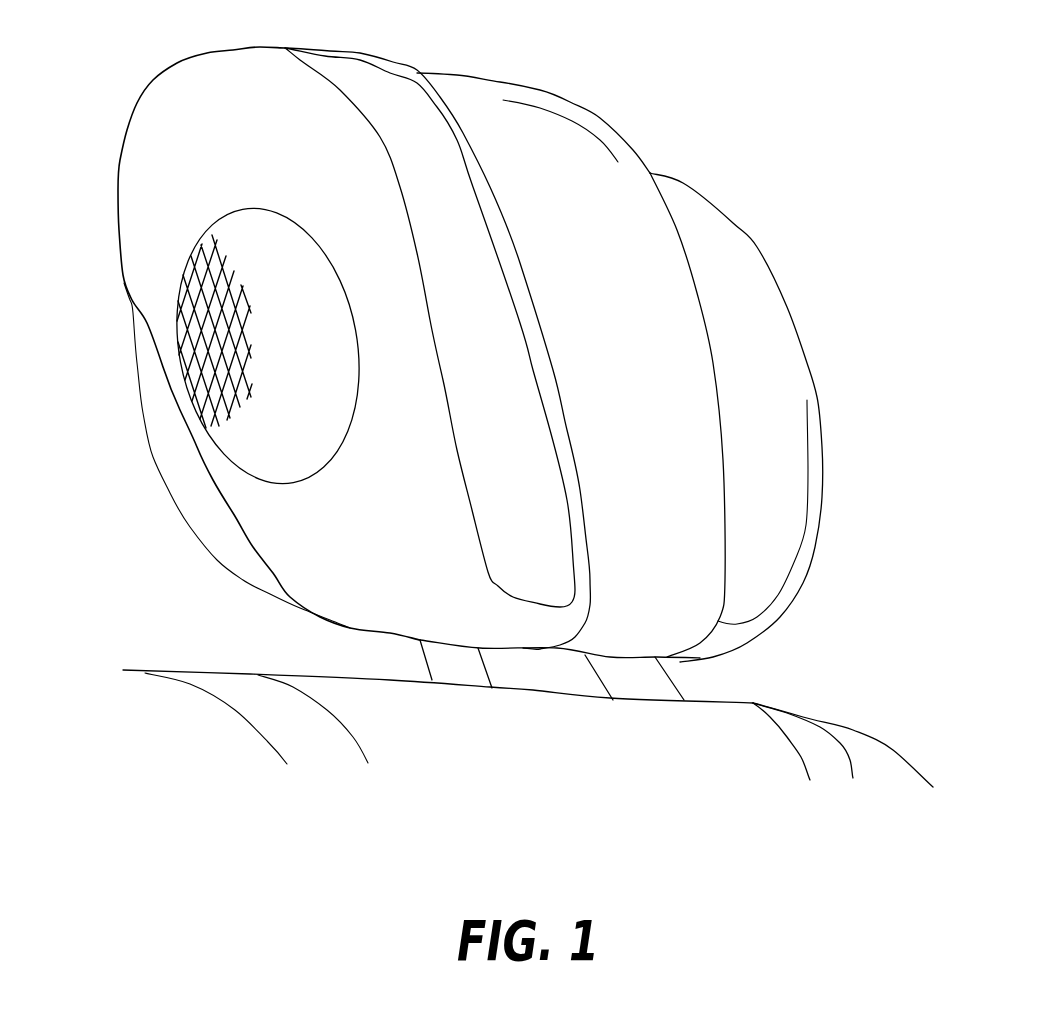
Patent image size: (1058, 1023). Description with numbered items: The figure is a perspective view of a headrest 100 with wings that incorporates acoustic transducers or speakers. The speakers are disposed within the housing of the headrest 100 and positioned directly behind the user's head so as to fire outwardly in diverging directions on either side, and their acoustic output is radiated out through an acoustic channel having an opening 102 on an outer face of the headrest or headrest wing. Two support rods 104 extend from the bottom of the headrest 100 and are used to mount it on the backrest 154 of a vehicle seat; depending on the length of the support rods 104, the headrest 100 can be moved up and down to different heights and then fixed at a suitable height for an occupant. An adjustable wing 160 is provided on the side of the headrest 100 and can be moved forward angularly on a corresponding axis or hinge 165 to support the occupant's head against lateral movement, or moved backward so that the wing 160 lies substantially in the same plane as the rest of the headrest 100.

The headrest 100 is at (600, 213).
The opening 102 is at (195, 387).
The support rod 104 is at (430, 661).
The backrest 154 is at (733, 717).
The wing 160 is at (470, 383).
The hinge 165 is at (550, 345).